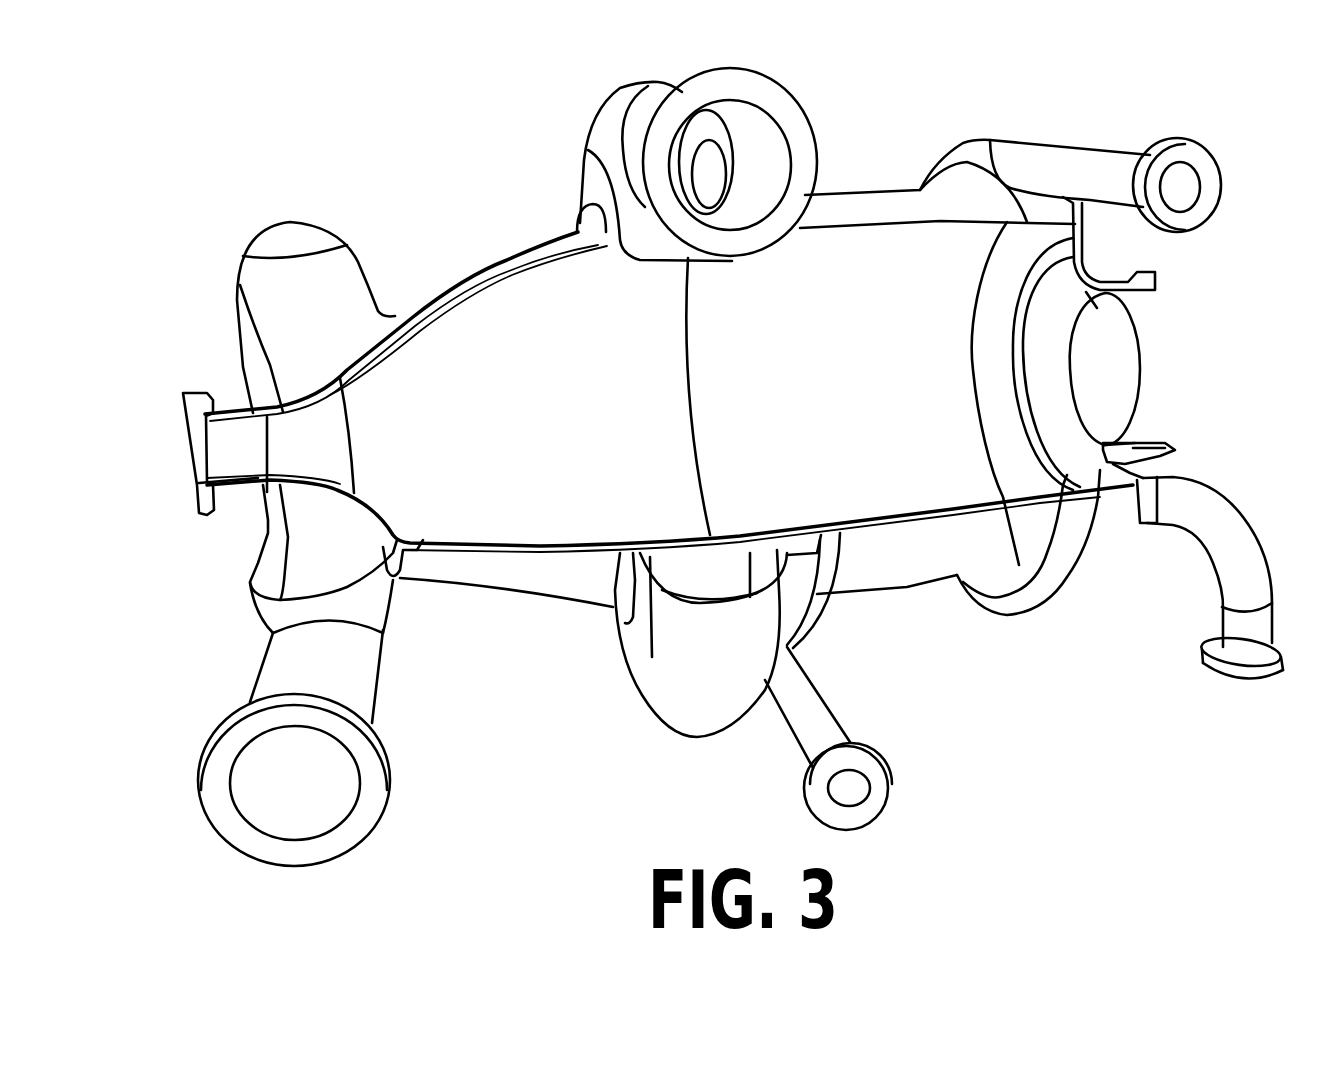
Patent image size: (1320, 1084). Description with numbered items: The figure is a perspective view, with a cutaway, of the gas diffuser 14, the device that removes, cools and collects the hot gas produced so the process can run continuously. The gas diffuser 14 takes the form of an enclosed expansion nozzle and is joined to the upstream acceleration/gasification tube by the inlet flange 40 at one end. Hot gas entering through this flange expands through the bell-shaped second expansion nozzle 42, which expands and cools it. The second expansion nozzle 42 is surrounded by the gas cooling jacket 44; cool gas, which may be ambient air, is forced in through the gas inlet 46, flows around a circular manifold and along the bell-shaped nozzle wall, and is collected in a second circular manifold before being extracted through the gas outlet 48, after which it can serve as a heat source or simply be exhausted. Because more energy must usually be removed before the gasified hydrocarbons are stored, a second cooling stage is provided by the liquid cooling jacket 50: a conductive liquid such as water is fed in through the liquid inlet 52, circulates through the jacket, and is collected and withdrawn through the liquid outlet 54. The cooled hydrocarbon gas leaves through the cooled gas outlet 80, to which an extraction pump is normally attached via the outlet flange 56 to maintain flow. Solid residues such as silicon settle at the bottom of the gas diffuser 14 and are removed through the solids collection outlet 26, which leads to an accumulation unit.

The gas diffuser 14 is at (983, 728).
The solids collection outlet 26 is at (1228, 580).
The inlet flange 40 is at (185, 390).
The second expansion nozzle 42 is at (415, 415).
The gas cooling jacket 44 is at (470, 548).
The gas inlet 46 is at (275, 808).
The gas outlet 48 is at (752, 132).
The liquid cooling jacket 50 is at (885, 520).
The liquid inlet 52 is at (848, 789).
The liquid outlet 54 is at (1183, 187).
The outlet flange 56 is at (1157, 278).
The cooled gas outlet 80 is at (1103, 387).